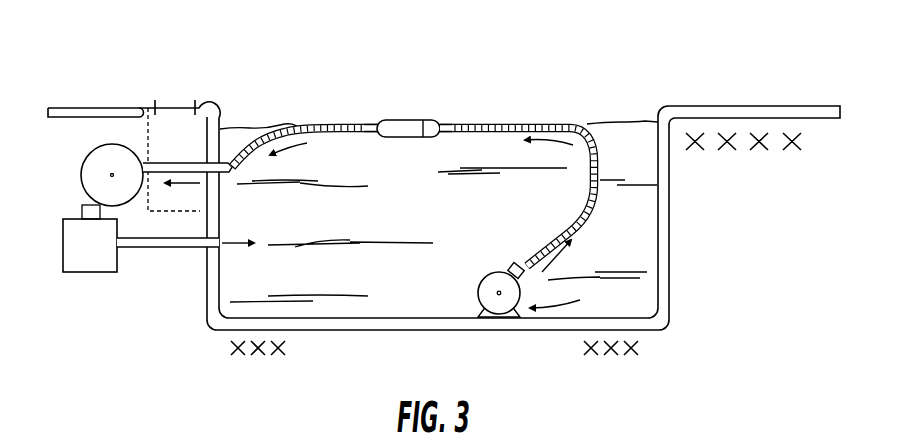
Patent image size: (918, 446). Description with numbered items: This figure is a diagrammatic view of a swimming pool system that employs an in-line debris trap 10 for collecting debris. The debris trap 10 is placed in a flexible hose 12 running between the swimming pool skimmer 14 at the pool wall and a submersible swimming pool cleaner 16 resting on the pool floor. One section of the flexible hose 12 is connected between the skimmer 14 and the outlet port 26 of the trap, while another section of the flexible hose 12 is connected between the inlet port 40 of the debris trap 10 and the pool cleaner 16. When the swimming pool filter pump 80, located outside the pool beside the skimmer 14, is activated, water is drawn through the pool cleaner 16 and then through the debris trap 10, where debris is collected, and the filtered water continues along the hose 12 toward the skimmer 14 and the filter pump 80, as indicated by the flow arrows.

The debris trap 10 is at (428, 99).
The flexible hose 12 is at (480, 122).
The swimming pool skimmer 14 is at (190, 125).
The submersible swimming pool cleaner 16 is at (487, 287).
The outlet port 26 is at (373, 123).
The inlet port 40 is at (447, 134).
The swimming pool filter pump 80 is at (92, 172).